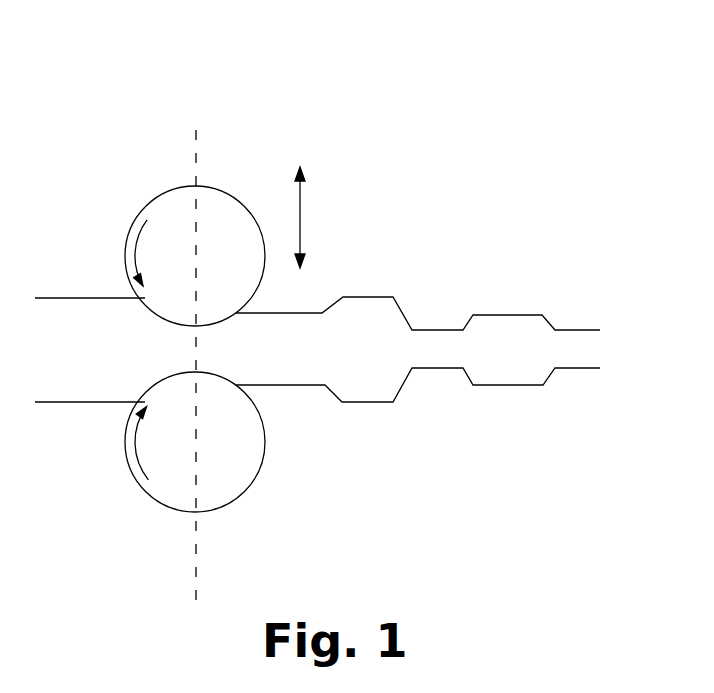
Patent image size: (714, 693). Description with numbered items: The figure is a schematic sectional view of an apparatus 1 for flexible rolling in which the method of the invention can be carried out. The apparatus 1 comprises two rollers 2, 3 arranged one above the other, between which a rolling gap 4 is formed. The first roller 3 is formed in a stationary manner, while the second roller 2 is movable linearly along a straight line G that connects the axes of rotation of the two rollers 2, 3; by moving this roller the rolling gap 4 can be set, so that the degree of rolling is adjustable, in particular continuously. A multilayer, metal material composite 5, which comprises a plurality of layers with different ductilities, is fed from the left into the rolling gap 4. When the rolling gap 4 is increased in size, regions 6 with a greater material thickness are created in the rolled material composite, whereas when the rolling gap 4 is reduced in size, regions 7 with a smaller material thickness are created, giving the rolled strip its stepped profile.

The apparatus for flexible rolling 1 is at (350, 86).
The roller 2 is at (163, 217).
The first roller 3 is at (158, 483).
The rolling gap 4 is at (214, 353).
The multilayer metal material composite 5 is at (80, 333).
The regions with a greater material thickness 6 is at (364, 258).
The regions with a smaller material thickness 7 is at (448, 293).
The straight line G is at (198, 161).